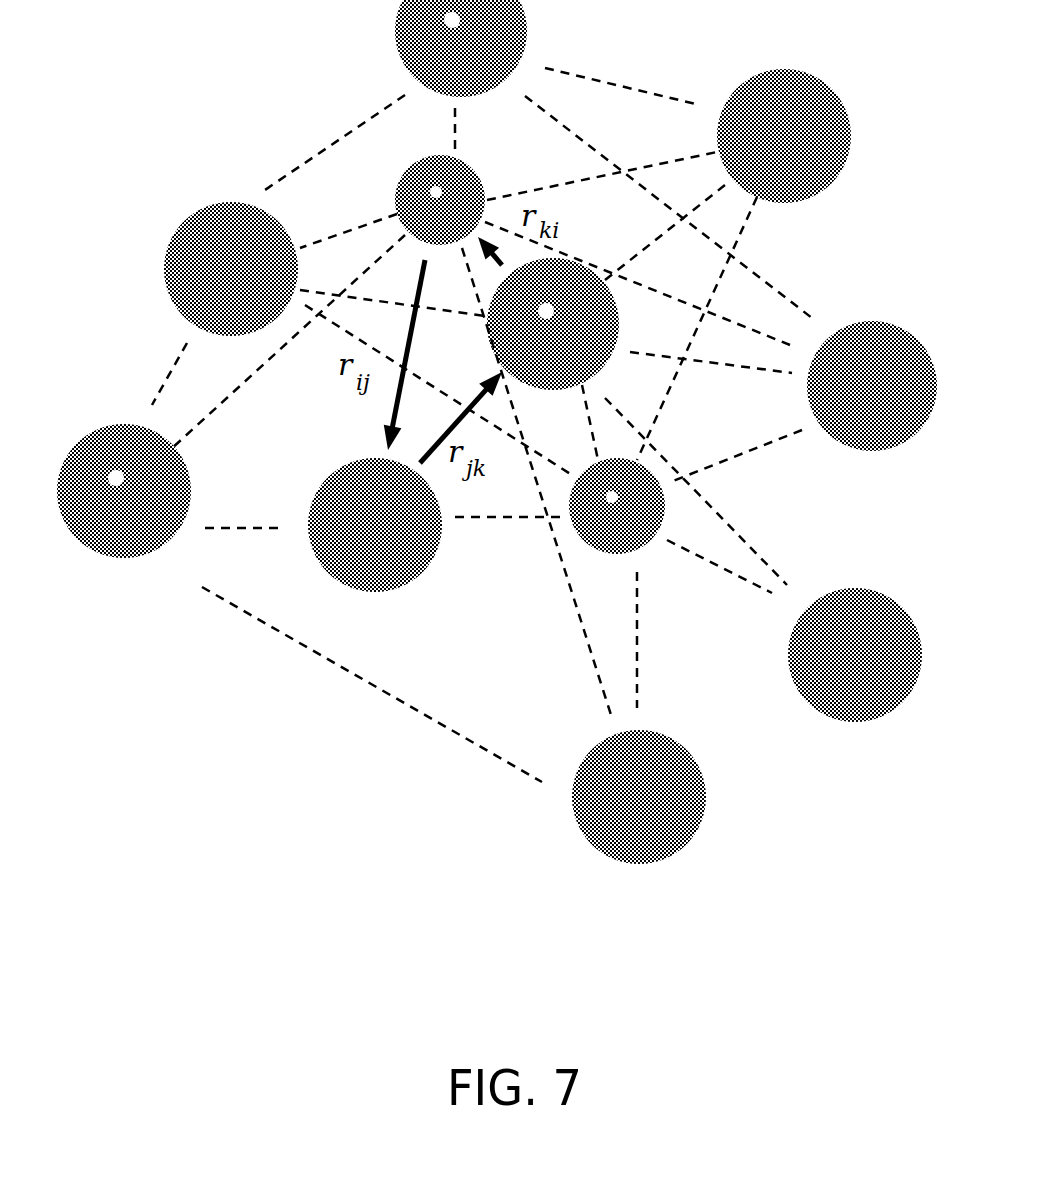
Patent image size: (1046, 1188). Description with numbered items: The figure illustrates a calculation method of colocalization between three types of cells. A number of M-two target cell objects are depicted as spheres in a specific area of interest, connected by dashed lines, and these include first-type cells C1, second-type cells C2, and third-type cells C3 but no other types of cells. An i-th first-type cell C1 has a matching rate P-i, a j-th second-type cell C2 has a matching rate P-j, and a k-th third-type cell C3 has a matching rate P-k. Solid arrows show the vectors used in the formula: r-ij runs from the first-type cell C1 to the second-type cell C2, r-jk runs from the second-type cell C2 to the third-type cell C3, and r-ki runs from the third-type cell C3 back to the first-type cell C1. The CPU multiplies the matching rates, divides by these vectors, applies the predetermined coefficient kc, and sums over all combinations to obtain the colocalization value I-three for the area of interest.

The first-type cell C1 is at (470, 172).
The second-type cell C2 is at (395, 585).
The third-type cell C3 is at (616, 320).